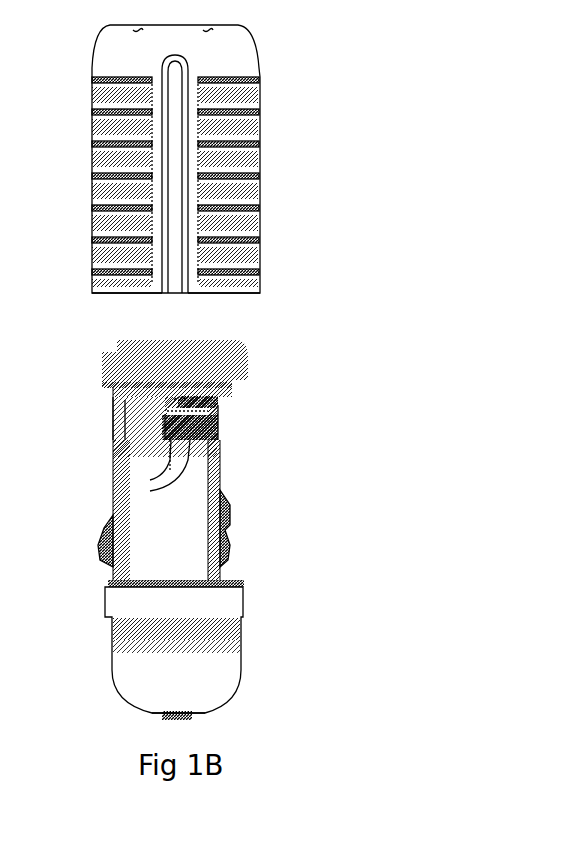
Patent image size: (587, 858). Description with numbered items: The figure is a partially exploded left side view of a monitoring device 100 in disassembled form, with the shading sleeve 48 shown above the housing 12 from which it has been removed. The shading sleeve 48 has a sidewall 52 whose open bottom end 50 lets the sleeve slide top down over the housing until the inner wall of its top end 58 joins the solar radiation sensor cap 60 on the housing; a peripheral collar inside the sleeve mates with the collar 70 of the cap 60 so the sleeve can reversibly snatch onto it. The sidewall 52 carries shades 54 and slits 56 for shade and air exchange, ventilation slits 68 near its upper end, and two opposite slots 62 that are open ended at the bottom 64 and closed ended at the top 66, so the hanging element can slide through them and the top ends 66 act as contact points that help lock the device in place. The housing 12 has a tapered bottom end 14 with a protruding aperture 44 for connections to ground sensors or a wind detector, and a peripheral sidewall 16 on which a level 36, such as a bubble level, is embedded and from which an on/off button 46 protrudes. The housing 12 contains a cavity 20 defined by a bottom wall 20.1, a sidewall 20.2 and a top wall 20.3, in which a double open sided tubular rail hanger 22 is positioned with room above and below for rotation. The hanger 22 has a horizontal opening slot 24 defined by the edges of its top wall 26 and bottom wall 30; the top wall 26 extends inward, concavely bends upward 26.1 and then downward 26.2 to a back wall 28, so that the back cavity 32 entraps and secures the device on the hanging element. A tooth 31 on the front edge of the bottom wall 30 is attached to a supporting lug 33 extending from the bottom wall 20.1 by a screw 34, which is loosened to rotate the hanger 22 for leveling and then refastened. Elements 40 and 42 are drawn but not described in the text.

The monitoring device 100 is at (390, 290).
The shading sleeve 48 is at (278, 121).
The top end of the shading sleeve 58 is at (164, 25).
The ventilation slits 68 is at (211, 27).
The top end of the slot 66 is at (172, 55).
The slits 56 is at (245, 181).
The shades 54 is at (245, 207).
The sidewall of the shading sleeve 52 is at (243, 267).
The slots 62 is at (174, 278).
The bottom end of the slot 64 is at (169, 294).
The bottom end of the sidewall 50 is at (230, 294).
The housing 12 is at (292, 552).
The solar radiation sensor cap 60 is at (117, 348).
The collar of the solar radiation sensor cover 70 is at (108, 370).
The back cavity 32 is at (130, 400).
The cavity 20 is at (218, 404).
The horizontal opening slot 24 is at (221, 415).
The top wall of the hanger 26 is at (189, 399).
The upward bend of the top wall 26.1 is at (183, 396).
The downward bend of the top wall 26.2 is at (178, 398).
The top wall of the cavity 20.3 is at (186, 398).
The rail hanger 22 is at (232, 412).
The screw 34 is at (225, 435).
The back wall of the hanger 28 is at (149, 427).
The bottom wall of the hanger 30 is at (155, 428).
The sidewall of the cavity 20.2 is at (151, 438).
The bottom wall of the cavity 20.1 is at (150, 480).
The supporting lug 33 is at (150, 491).
The tooth 31 is at (218, 449).
The on/off button 46 is at (99, 547).
The right hatched wall portion 42 is at (231, 545).
The base plate 40 is at (232, 572).
The peripheral sidewall 16 is at (118, 659).
The level 36 is at (238, 625).
The tapered bottom end 14 is at (128, 704).
The protruding aperture 44 is at (166, 720).